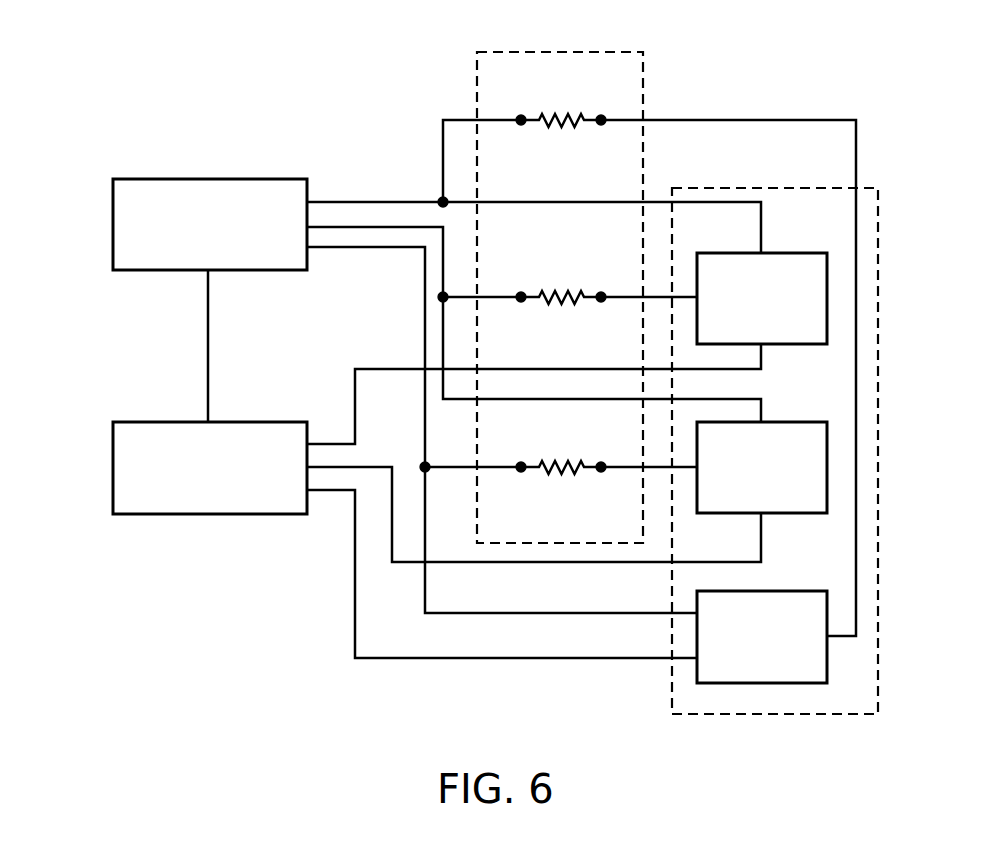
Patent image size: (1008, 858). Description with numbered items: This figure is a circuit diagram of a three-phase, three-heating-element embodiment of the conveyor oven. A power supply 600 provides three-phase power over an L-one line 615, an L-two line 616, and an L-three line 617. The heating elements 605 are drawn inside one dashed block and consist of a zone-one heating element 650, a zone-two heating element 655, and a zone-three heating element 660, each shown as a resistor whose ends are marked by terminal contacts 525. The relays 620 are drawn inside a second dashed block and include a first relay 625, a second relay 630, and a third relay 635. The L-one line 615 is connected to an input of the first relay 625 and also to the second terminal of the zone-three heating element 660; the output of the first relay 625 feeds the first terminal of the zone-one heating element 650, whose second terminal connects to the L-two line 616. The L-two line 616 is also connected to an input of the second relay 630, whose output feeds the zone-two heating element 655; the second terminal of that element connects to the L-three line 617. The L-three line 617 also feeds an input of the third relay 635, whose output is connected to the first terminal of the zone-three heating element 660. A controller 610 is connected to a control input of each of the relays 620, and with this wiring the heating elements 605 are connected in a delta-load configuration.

The power supply 600 is at (113, 222).
The controller 610 is at (113, 469).
The heating elements 605 is at (562, 52).
The L1 line 615 is at (748, 118).
The L2 line 616 is at (443, 280).
The L3 line 617 is at (425, 316).
The relays 620 is at (775, 186).
The first relay 625 is at (795, 251).
The second relay 630 is at (795, 420).
The third relay 635 is at (795, 589).
The electrical contact 525 is at (601, 116).
The zone 1 heating element 650 is at (562, 128).
The zone 2 heating element 655 is at (560, 306).
The zone 3 heating element 660 is at (562, 476).